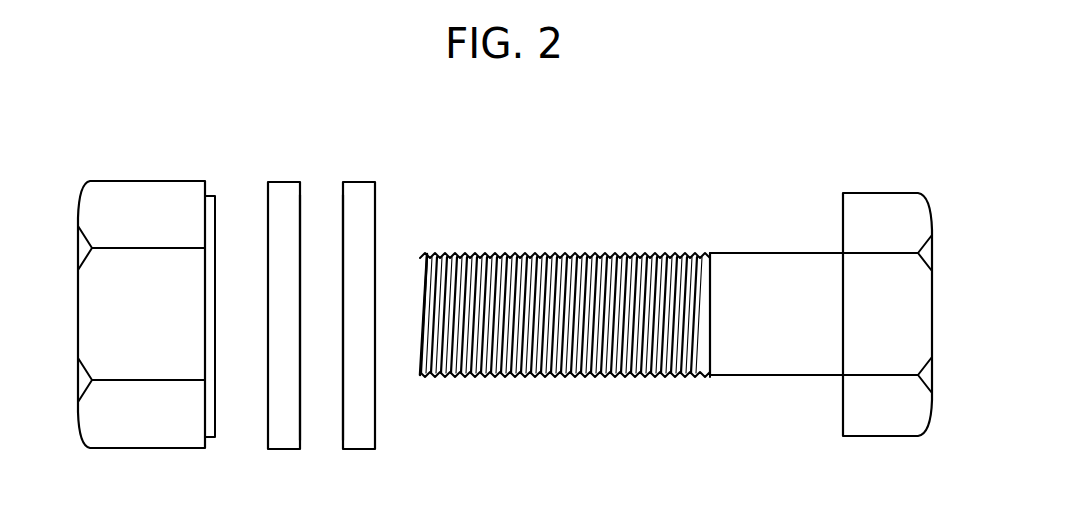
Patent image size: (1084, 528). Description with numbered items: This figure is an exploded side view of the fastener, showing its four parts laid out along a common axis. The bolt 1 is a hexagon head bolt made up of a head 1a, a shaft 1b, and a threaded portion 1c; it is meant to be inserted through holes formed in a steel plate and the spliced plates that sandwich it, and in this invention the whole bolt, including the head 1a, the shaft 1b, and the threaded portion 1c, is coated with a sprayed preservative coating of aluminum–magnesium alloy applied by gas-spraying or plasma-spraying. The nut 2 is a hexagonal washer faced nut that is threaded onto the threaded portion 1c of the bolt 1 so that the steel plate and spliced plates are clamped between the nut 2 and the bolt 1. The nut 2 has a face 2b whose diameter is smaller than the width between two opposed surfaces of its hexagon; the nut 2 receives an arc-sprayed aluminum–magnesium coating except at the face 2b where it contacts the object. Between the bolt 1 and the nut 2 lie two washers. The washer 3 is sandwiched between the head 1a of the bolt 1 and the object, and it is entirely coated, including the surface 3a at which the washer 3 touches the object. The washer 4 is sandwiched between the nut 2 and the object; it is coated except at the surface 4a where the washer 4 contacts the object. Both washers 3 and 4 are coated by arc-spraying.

The bolt 1 is at (676, 304).
The head 1a is at (843, 443).
The shaft 1b is at (707, 443).
The threaded portion 1c is at (420, 443).
The nut 2 is at (152, 300).
The face 2b is at (215, 425).
The washer 3 is at (365, 312).
The surface 3a is at (343, 429).
The washer 4 is at (275, 310).
The surface 4a is at (300, 424).